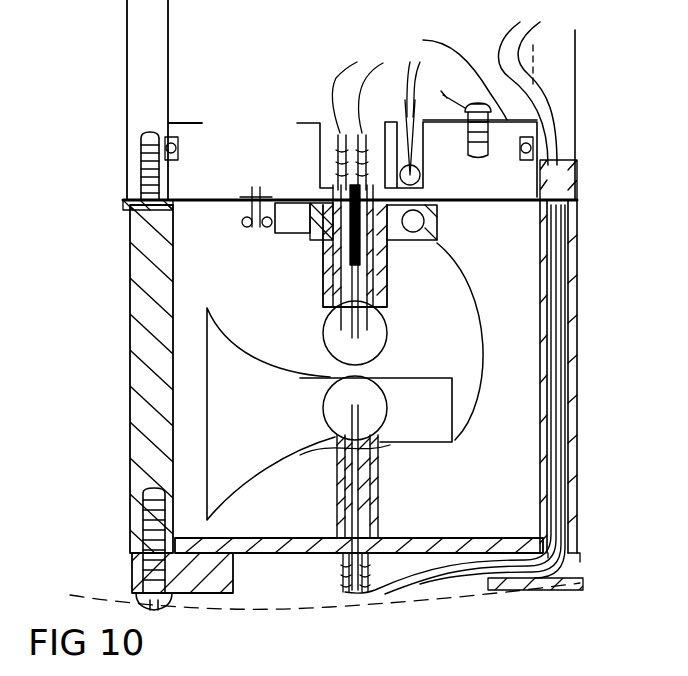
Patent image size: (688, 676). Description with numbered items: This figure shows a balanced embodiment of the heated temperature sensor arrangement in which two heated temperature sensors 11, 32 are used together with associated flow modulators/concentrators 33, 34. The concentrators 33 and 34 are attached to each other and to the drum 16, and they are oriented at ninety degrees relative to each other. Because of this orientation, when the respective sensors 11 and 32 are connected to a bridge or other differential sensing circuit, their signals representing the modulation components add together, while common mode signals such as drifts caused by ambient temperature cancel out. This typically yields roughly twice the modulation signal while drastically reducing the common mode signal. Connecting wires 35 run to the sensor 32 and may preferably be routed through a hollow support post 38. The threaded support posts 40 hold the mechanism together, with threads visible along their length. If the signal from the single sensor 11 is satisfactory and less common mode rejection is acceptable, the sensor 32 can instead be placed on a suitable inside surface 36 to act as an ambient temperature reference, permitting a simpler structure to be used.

The heated temperature sensor 11 is at (345, 342).
The drum 16 is at (270, 233).
The heated temperature sensor 32 is at (348, 412).
The flow modulator/concentrator 33 is at (460, 270).
The flow modulator/concentrator 34 is at (452, 443).
The connecting wires 35 is at (503, 42).
The inside surface 36 is at (448, 73).
The hollow support post 38 is at (577, 400).
The threaded support post 40 is at (132, 397).